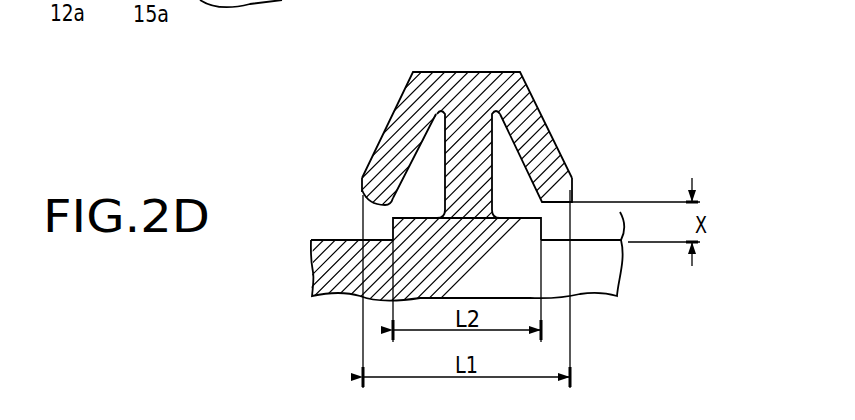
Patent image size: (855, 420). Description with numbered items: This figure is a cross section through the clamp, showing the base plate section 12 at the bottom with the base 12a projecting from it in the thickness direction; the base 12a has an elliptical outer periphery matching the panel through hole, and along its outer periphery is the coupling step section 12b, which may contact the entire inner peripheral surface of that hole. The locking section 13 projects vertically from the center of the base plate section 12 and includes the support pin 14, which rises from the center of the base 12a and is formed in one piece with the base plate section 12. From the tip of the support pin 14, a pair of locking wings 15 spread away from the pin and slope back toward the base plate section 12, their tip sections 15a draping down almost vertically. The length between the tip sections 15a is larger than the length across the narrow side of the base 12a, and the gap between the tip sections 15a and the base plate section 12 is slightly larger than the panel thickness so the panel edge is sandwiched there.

The base plate section 12 is at (587, 240).
The base 12a is at (556, 145).
The coupling step section 12b is at (540, 228).
The locking section 13 is at (526, 84).
The support pin 14 is at (465, 150).
The locking wings 15 is at (375, 152).
The tip sections 15a is at (380, 205).